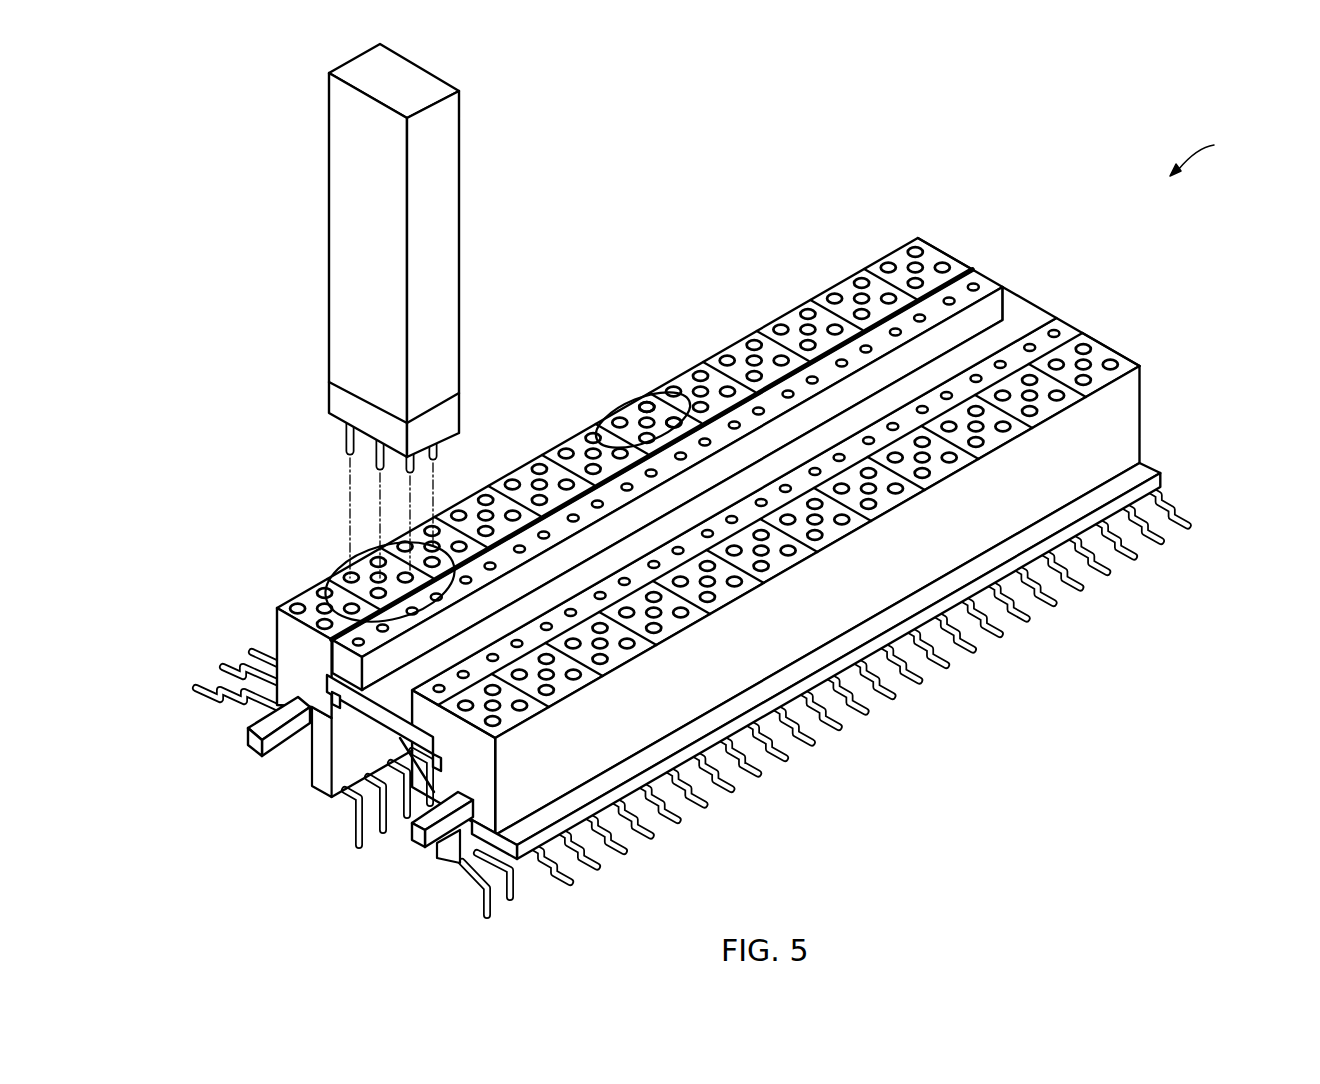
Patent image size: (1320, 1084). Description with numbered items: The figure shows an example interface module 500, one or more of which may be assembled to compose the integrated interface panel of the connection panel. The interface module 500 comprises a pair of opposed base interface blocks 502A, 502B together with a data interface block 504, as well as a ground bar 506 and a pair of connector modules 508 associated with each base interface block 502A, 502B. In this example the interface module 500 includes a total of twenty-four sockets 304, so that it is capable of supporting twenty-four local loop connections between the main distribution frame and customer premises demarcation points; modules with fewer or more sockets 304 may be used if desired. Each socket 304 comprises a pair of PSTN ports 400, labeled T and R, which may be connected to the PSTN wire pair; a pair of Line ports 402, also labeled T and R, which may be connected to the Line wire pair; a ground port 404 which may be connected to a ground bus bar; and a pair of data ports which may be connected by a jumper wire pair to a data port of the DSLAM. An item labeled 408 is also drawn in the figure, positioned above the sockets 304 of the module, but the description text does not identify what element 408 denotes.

The interface module 500 is at (1213, 155).
The base interface block 502A is at (290, 640).
The base interface block 502B is at (1123, 408).
The data interface block 504 is at (1017, 318).
The ground bar 506 is at (252, 742).
The connector module 508 is at (258, 710).
The plug 408 is at (447, 245).
The PSTN port 400 is at (622, 418).
The Line port 402 is at (665, 426).
The ground port 404 is at (643, 405).
The socket 304 is at (327, 548).